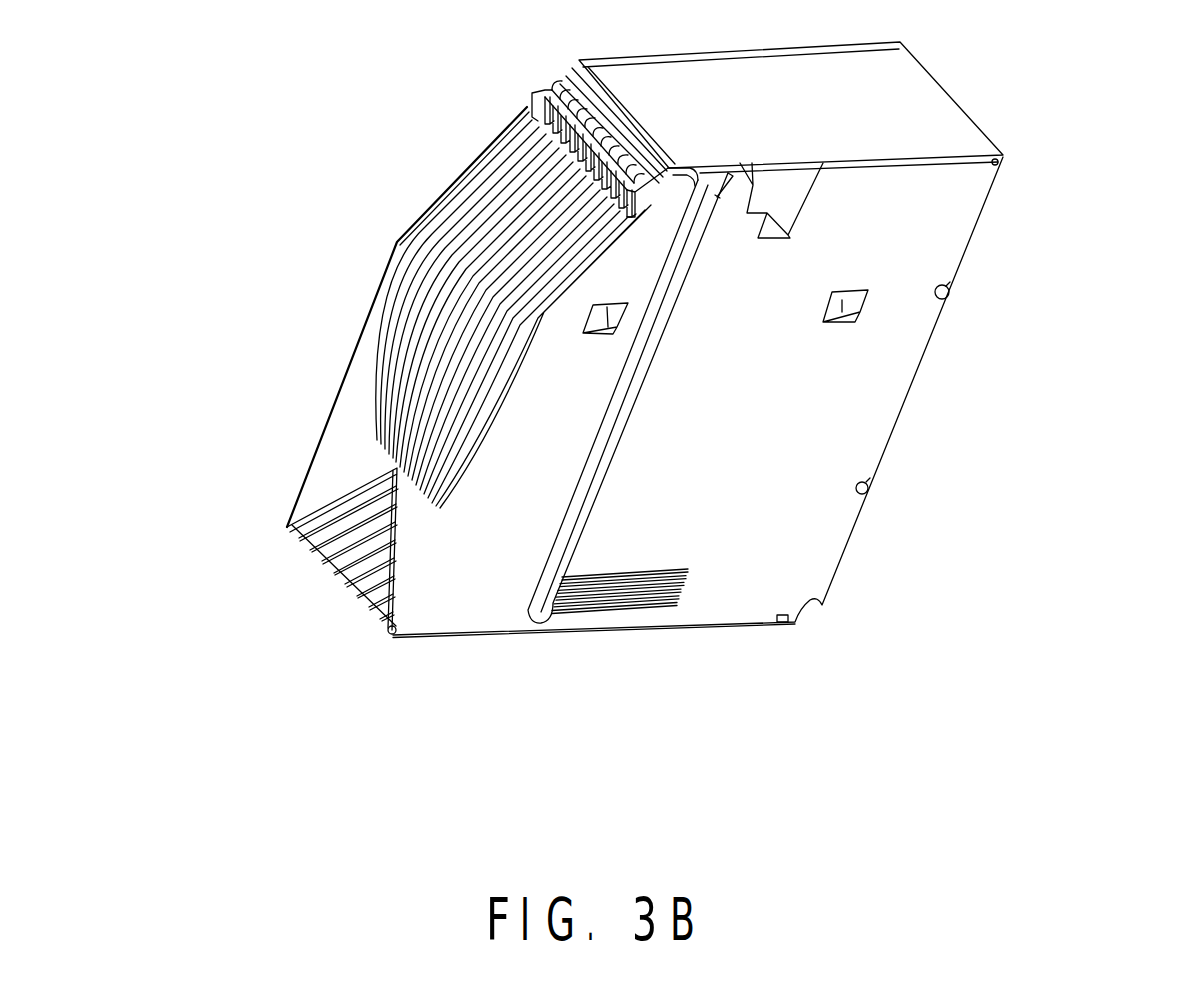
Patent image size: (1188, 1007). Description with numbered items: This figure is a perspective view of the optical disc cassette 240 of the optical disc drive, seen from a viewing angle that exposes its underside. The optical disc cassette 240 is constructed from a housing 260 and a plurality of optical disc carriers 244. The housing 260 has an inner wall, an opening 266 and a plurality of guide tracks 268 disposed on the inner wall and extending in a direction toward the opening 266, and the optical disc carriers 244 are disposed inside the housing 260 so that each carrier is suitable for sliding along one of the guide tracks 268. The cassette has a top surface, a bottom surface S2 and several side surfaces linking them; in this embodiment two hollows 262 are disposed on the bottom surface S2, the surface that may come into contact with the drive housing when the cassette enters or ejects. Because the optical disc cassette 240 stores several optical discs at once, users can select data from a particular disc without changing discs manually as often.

The optical disc cassette 240 is at (1141, 672).
The optical disc carrier 244 is at (500, 189).
The housing 260 is at (905, 92).
The hollow 262 is at (604, 317).
The opening 266 is at (328, 470).
The guide track 268 is at (310, 548).
The bottom surface S2 is at (895, 375).